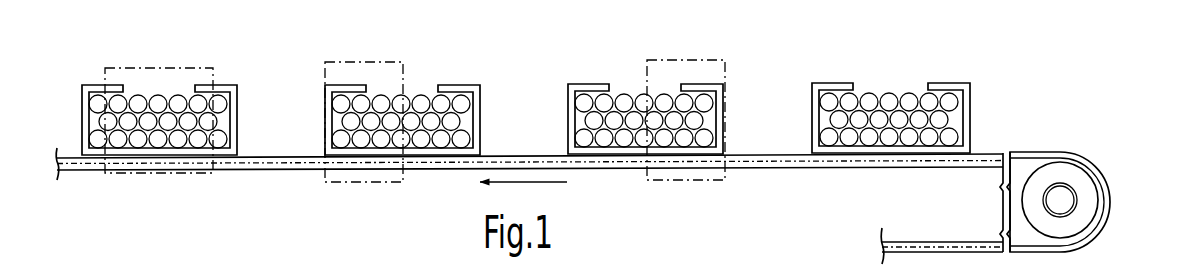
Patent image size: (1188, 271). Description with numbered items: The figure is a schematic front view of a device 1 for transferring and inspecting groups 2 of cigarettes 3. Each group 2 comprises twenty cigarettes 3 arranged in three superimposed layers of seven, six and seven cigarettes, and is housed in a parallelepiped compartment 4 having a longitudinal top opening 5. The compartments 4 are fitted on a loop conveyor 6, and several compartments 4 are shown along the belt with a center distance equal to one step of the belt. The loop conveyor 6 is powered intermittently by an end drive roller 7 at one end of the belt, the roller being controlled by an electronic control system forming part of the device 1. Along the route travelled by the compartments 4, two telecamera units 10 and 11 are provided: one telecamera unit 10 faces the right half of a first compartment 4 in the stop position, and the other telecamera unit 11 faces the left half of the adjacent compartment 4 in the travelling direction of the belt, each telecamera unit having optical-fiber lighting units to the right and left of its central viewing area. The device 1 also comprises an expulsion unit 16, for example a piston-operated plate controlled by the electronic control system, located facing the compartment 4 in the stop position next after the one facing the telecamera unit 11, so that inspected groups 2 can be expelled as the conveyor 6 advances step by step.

The device for transferring and inspecting groups of cigarettes 1 is at (1064, 74).
The group of cigarettes 2 is at (523, 83).
The cigarette 3 is at (168, 96).
The compartment 4 is at (245, 106).
The longitudinal top opening 5 is at (523, 74).
The loop conveyor 6 is at (774, 162).
The end drive roller 7 is at (1084, 198).
The telecamera unit 10 is at (688, 182).
The telecamera unit 11 is at (368, 184).
The expulsion unit 16 is at (173, 175).